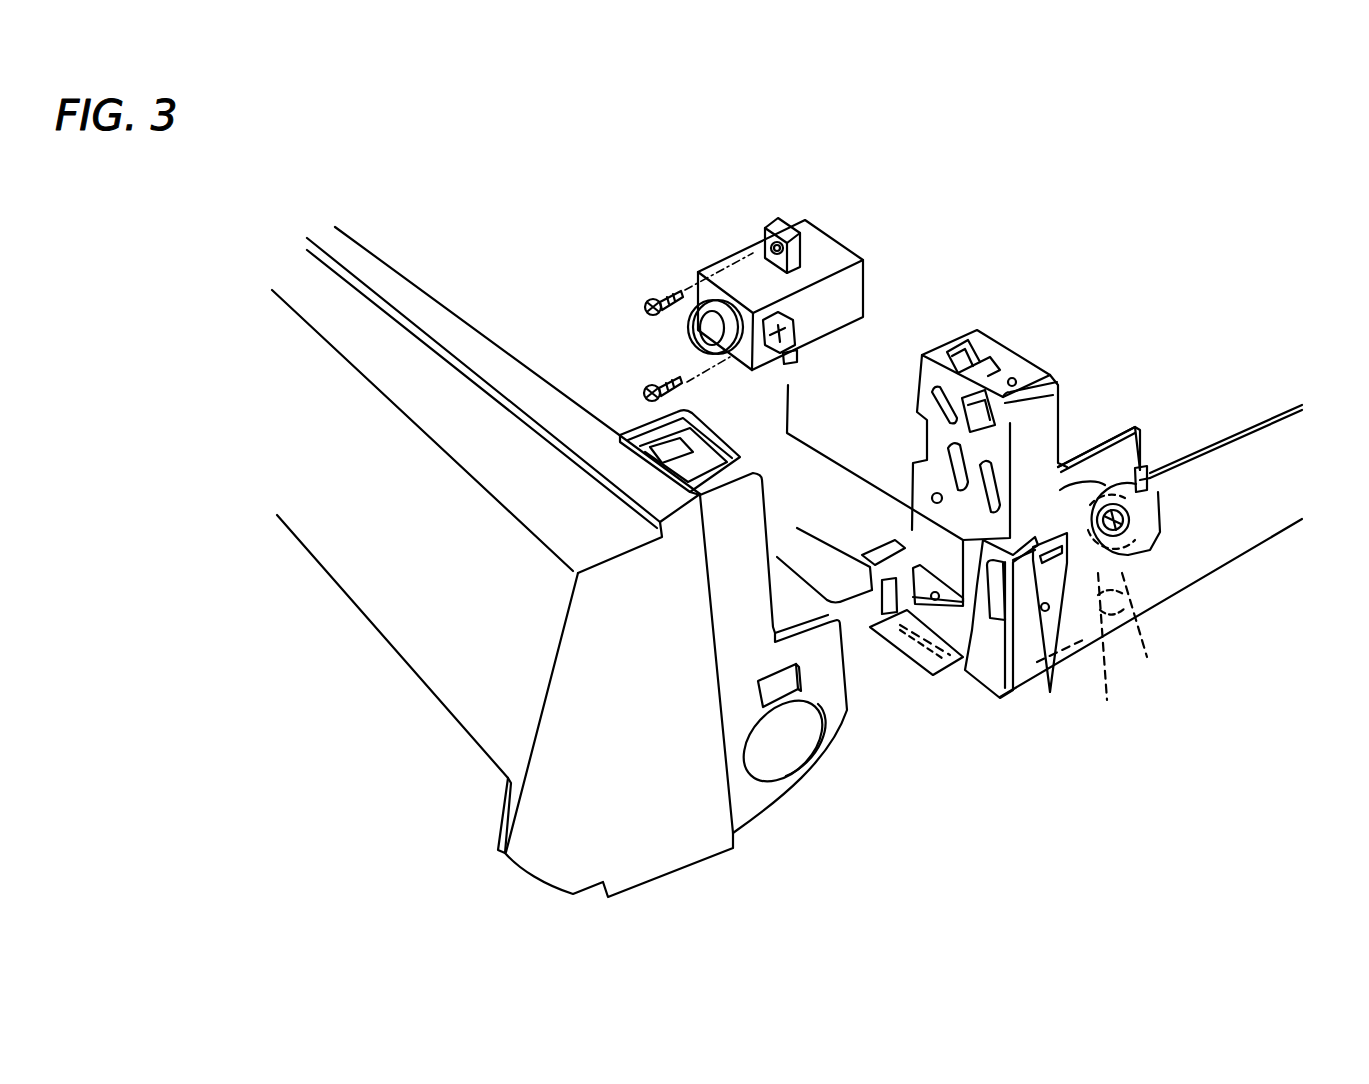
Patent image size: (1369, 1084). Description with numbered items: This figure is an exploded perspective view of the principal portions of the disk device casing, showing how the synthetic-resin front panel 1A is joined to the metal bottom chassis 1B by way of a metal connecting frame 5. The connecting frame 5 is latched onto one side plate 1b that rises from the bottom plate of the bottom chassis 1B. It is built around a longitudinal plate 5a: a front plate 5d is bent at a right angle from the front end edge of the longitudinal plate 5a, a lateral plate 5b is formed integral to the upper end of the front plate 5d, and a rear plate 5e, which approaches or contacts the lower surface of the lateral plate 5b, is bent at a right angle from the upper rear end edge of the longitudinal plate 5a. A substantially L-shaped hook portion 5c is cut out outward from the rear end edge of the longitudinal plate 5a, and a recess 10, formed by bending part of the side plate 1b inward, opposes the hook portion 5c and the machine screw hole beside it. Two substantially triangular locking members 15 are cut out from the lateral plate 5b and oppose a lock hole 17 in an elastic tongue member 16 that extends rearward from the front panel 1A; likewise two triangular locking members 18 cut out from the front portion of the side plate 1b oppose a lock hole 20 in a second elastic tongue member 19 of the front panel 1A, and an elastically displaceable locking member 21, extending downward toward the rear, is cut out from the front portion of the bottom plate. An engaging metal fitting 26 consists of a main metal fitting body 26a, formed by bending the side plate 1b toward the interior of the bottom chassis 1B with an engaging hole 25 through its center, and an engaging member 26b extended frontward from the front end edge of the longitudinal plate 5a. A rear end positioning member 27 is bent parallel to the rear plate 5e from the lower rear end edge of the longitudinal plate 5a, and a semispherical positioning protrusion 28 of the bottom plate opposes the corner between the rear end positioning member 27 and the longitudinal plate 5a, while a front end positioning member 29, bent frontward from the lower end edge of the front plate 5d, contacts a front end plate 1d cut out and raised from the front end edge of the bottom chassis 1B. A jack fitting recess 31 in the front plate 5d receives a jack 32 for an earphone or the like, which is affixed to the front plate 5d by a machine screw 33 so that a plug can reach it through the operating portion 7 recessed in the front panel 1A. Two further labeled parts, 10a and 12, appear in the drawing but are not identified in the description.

The front panel 1A is at (417, 286).
The bottom chassis 1B is at (1187, 586).
The side plate 1b is at (1252, 450).
The front end plate 1d is at (912, 670).
The connecting frame 5 is at (1274, 252).
The longitudinal plate 5a is at (1115, 433).
The lateral plate 5b is at (1015, 357).
The hook portion 5c is at (1137, 428).
The front plate 5d is at (916, 400).
The rear plate 5e is at (1033, 375).
The operating portion 7 is at (407, 670).
The recess 10 is at (1138, 505).
The hook 10a is at (1133, 500).
The screw 12 is at (1127, 528).
The locking members 15 is at (983, 333).
The elastic tongue member 16 is at (630, 420).
The lock hole 17 is at (677, 443).
The locking members 18 is at (1050, 693).
The elastic tongue member 19 is at (770, 797).
The lock hole 20 is at (778, 683).
The locking member 21 is at (868, 565).
The engaging hole 25 is at (1027, 683).
The engaging metal fitting 26 is at (988, 822).
The main metal fitting body 26a is at (960, 673).
The engaging member 26b is at (980, 683).
The rear end positioning member 27 is at (1145, 603).
The positioning protrusion 28 is at (1103, 693).
The front end positioning member 29 is at (893, 627).
The jack fitting recess 31 is at (932, 544).
The jack 32 is at (827, 253).
The machine screw 33 is at (647, 397).